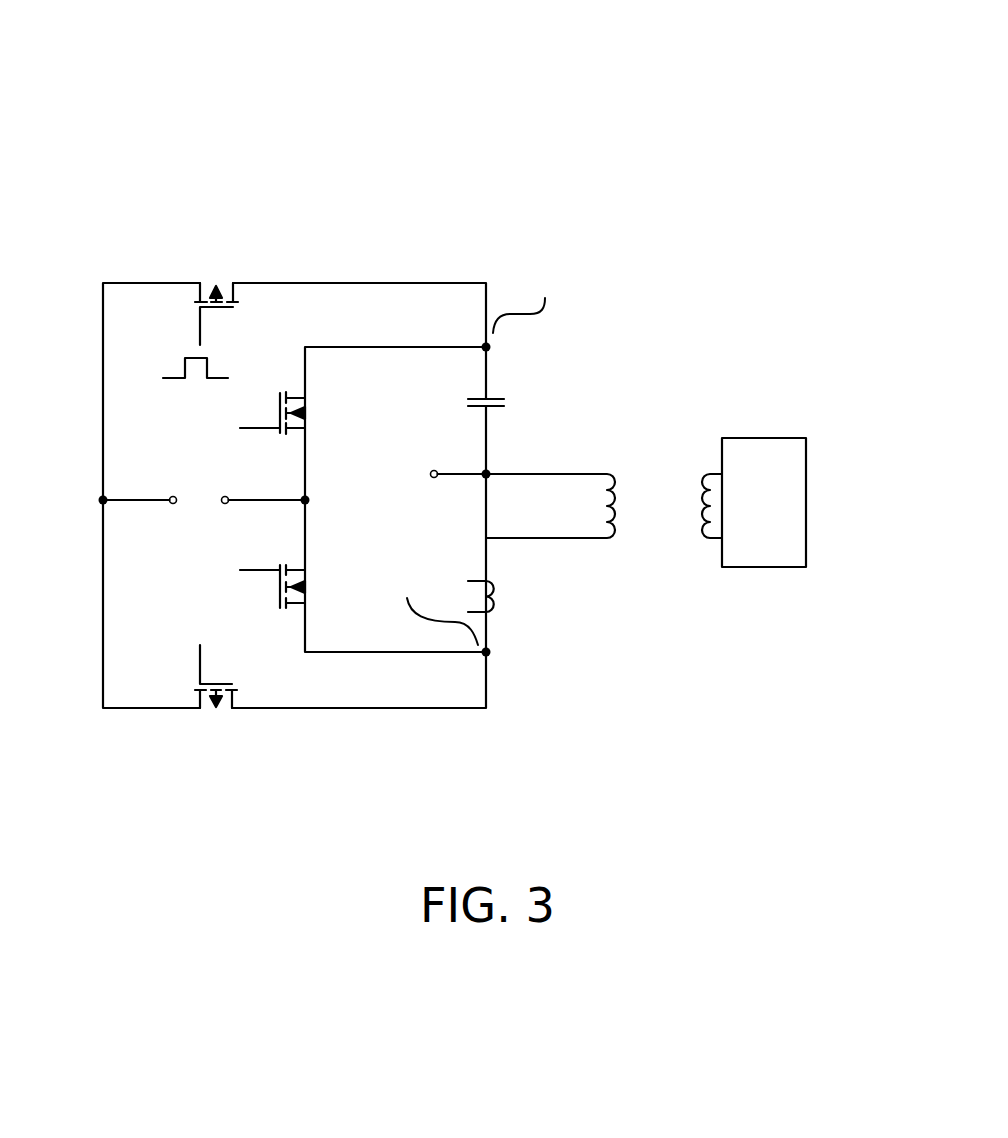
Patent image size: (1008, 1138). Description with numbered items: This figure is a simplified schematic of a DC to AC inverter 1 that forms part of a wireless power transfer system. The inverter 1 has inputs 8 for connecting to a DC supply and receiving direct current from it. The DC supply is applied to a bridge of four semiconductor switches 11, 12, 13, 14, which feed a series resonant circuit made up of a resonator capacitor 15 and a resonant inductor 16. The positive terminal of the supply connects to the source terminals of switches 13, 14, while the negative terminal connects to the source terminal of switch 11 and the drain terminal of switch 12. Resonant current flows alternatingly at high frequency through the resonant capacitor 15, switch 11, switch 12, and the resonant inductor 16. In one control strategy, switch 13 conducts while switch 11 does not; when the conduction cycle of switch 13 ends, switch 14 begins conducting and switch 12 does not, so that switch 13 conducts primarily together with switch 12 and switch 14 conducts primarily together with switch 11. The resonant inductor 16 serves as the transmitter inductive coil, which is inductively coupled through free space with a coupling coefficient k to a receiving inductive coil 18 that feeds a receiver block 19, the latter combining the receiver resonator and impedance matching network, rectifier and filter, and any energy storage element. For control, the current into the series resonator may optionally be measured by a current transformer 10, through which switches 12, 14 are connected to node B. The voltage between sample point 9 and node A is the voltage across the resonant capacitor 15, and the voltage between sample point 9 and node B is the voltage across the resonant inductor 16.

The inverter 1 is at (373, 82).
The inputs 8 is at (224, 492).
The sample point 9 is at (432, 457).
The current transformer 10 is at (503, 602).
The switch 11 is at (285, 382).
The switch 12 is at (275, 587).
The switch 13 is at (192, 300).
The switch 14 is at (243, 695).
The resonator capacitor 15 is at (500, 382).
The resonant inductor 16 is at (611, 472).
The receiving inductive coil 18 is at (710, 466).
The receiver block 19 is at (778, 503).